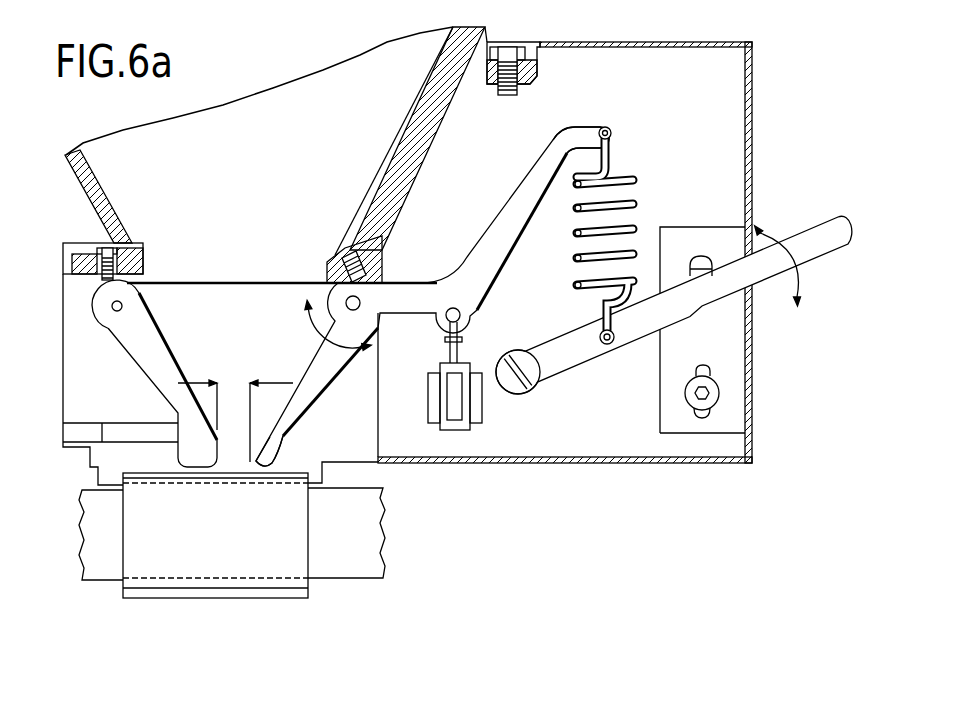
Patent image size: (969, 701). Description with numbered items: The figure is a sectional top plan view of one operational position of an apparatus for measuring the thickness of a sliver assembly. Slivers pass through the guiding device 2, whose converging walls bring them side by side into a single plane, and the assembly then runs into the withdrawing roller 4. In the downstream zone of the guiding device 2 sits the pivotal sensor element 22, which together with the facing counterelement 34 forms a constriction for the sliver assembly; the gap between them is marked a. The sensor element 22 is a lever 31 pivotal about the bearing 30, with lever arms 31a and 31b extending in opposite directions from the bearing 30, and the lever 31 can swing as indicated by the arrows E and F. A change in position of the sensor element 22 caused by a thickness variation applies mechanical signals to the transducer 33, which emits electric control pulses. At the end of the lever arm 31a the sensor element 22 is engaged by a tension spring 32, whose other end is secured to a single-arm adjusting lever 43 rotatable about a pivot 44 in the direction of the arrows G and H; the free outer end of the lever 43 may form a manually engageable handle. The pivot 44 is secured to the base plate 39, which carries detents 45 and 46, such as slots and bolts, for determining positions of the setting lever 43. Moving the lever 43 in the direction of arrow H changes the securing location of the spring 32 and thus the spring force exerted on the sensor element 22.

The guiding device 2 is at (90, 200).
The withdrawing roller 4 is at (303, 544).
The sensor element 22 is at (287, 422).
The bearing 30 is at (360, 298).
The lever 31 is at (517, 213).
The lever arm 31a is at (548, 162).
The lever arm 31b is at (303, 372).
The tension spring 32 is at (633, 210).
The transducer 33 is at (467, 425).
The counterelement 34 is at (176, 403).
The base plate 39 is at (632, 85).
The adjusting lever 43 is at (825, 250).
The pivot 44 is at (522, 350).
The detent 45 is at (702, 250).
The detent 46 is at (712, 370).
The gap distance a is at (235, 415).
The arrow E is at (315, 305).
The arrow F is at (312, 328).
The arrow G is at (772, 290).
The arrow H is at (783, 234).